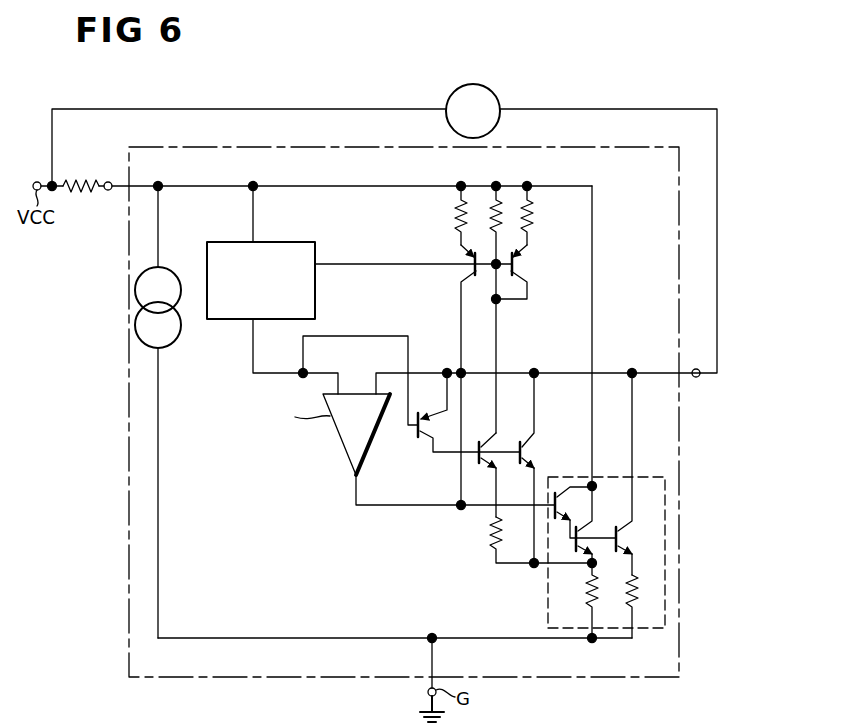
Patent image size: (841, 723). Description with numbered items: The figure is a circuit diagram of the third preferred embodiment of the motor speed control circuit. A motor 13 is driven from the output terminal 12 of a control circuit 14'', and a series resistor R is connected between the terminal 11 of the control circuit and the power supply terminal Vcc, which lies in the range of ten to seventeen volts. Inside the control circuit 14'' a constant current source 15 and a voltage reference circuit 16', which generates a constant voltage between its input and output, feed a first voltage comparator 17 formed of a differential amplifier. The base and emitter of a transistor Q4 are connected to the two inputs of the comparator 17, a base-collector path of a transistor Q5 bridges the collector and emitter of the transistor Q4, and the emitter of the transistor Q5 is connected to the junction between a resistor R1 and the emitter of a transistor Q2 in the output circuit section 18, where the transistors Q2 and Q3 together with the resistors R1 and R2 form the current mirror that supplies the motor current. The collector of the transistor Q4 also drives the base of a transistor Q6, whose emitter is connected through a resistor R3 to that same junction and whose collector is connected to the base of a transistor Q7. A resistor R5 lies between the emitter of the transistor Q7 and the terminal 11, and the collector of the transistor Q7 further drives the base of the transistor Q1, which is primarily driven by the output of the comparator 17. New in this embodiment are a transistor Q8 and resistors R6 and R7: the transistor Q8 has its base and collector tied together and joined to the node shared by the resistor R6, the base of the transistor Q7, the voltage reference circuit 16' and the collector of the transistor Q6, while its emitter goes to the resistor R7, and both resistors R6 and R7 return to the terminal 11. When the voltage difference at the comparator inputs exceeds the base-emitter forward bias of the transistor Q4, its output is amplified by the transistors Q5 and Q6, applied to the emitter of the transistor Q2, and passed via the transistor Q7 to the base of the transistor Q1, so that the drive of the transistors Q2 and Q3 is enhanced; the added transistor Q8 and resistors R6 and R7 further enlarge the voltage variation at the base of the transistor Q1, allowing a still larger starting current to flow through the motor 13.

The terminal of the control circuit 11 is at (107, 190).
The output terminal of the control circuit 12 is at (700, 377).
The motor 13 is at (500, 98).
The control circuit 14'' is at (404, 433).
The constant current source 15 is at (181, 272).
The voltage reference circuit 16' is at (261, 263).
The first voltage comparator 17 is at (340, 448).
The output circuit section 18 is at (637, 477).
The series resistor R is at (81, 170).
The resistor R1 is at (575, 600).
The resistor R2 is at (620, 606).
The resistor R3 is at (527, 540).
The resistor R5 is at (448, 215).
The resistor R6 is at (492, 216).
The resistor R7 is at (542, 215).
The transistor Q1 is at (558, 496).
The transistor Q2 is at (579, 531).
The transistor Q3 is at (619, 531).
The transistor Q4 is at (427, 438).
The transistor Q5 is at (523, 445).
The transistor Q6 is at (483, 445).
The transistor Q7 is at (470, 272).
The transistor Q8 is at (518, 272).